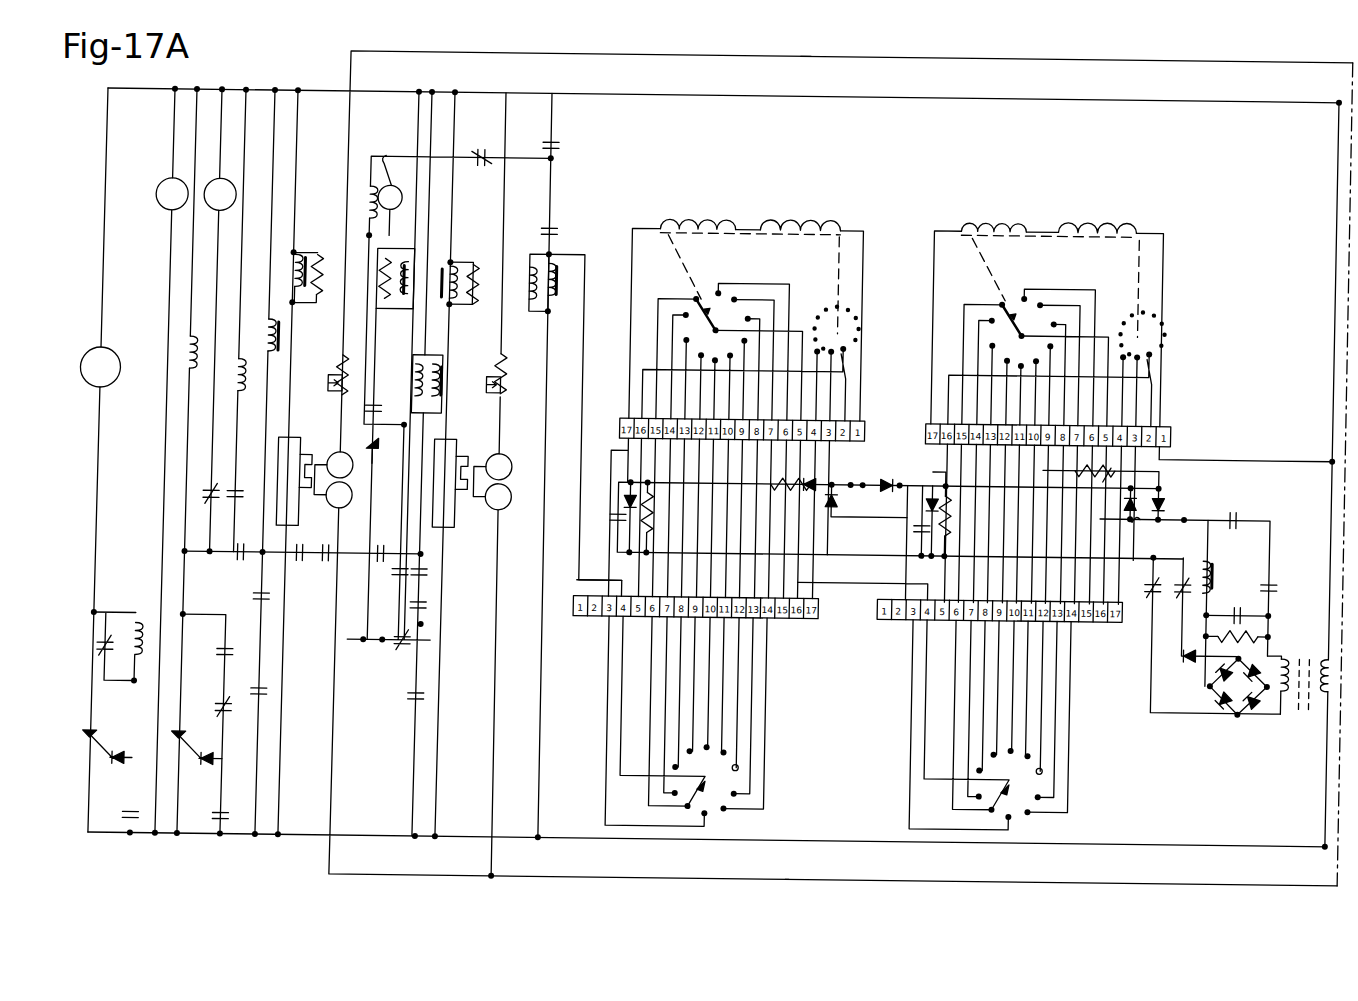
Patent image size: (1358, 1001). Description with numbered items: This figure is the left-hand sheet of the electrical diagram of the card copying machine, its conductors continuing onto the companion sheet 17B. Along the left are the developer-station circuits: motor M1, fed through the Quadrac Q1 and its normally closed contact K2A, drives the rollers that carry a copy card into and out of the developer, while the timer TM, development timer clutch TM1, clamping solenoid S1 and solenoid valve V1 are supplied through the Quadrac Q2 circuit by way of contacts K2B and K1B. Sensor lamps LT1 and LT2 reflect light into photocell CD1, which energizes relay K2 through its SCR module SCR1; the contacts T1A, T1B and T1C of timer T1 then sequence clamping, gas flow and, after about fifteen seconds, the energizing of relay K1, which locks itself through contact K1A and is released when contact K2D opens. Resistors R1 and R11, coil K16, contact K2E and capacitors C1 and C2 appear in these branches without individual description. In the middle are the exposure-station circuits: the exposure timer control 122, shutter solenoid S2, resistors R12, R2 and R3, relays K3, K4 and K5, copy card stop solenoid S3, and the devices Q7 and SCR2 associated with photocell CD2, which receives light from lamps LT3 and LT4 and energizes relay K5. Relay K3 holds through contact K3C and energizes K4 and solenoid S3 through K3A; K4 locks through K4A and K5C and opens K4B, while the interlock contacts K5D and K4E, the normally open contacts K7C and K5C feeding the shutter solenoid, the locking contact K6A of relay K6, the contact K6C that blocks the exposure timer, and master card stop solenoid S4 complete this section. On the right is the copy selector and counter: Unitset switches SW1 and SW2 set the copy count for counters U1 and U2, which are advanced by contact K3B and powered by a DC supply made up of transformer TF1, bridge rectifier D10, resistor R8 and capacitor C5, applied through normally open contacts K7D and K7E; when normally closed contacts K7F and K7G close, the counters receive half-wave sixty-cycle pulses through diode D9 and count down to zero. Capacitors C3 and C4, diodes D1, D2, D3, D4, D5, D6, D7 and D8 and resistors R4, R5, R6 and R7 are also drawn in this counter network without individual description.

The continuation reference to FIG. 17B is at (1319, 470).
The motor M1 is at (98, 460).
The timer TM is at (165, 461).
The development timer clutch TM1 is at (230, 178).
The development clamping solenoid S1 is at (179, 461).
The development solenoid valve V1 is at (234, 320).
The relay K1 is at (257, 462).
The relay K2 is at (298, 462).
The resistor R11 is at (331, 274).
The potentiometer R1 is at (333, 373).
The silicon controlled rectifier SCR1 is at (288, 481).
The photocell CD1 is at (318, 450).
The sensor lamp LT1 is at (350, 450).
The sensor lamp LT2 is at (348, 505).
The normally closed timer contact T1A is at (199, 482).
The timer T1 is at (213, 459).
The timer contact T1B is at (243, 475).
The normally open timer contact T1C is at (232, 560).
The relay contact K2E is at (297, 561).
The interlock contact K4E is at (325, 563).
The interlock contact K5D is at (374, 566).
The normally open contact K2D is at (245, 596).
The locking contact K1A is at (283, 690).
The normally closed contact K2A is at (100, 621).
The relay coil K16 is at (137, 620).
The normally open contact K2B is at (208, 642).
The normally closed contact K1B is at (206, 698).
The Quadrac Q1 is at (107, 746).
The Quadrac Q2 is at (197, 747).
The capacitor C1 is at (111, 804).
The capacitor C2 is at (229, 803).
The exposure timer control 122 is at (391, 178).
The shutter solenoid S2 is at (364, 191).
The resistor R12 is at (394, 271).
The relay K3 is at (396, 274).
The relay K5 is at (451, 278).
The resistor R2 is at (482, 284).
The copy card stop solenoid S3 is at (410, 383).
The relay K4 is at (431, 367).
The thyristor Q7 is at (380, 426).
The silicon controlled rectifier SCR2 is at (444, 483).
The photocell CD2 is at (474, 450).
The holding contact K3C is at (396, 566).
The contact K3A is at (438, 569).
The contact K4A is at (438, 602).
The contact K4B is at (389, 649).
The normally open contact K5C is at (424, 698).
The contact K6C is at (481, 144).
The normally open contact K7C is at (562, 144).
The locking contact K6A is at (566, 224).
The relay K6 is at (575, 423).
The master card stop solenoid S4 is at (521, 276).
The potentiometer R3 is at (507, 374).
The lamp LT3 is at (512, 453).
The lamp LT4 is at (496, 502).
The multicopy counter U1 is at (742, 396).
The multicopy selector switch SW1 is at (686, 726).
The capacitor C3 is at (607, 519).
The diode D1 is at (630, 509).
The resistor R4 is at (653, 517).
The resistor R5 is at (791, 475).
The diode D2 is at (813, 475).
The diode D3 is at (866, 500).
The diode D4 is at (876, 477).
The capacitor C4 is at (900, 520).
The diode D5 is at (920, 522).
The resistor R6 is at (949, 515).
The multicopy counter U2 is at (1048, 401).
The multicopy selector switch SW2 is at (990, 730).
The potentiometer R7 is at (1095, 479).
The diode D6 is at (1113, 507).
The diode D8 is at (1172, 502).
The diode D7 is at (1138, 529).
The normally open contact K7E is at (1237, 532).
The normally closed contact K7F is at (1150, 578).
The normally closed contact K7G is at (1198, 575).
The normally open contact K7D is at (1237, 582).
The contact K3B is at (1279, 578).
The capacitor C5 is at (1248, 615).
The resistor R8 is at (1248, 636).
The diode D9 is at (1176, 667).
The bridge rectifier D10 is at (1238, 686).
The transformer TF1 is at (1297, 703).